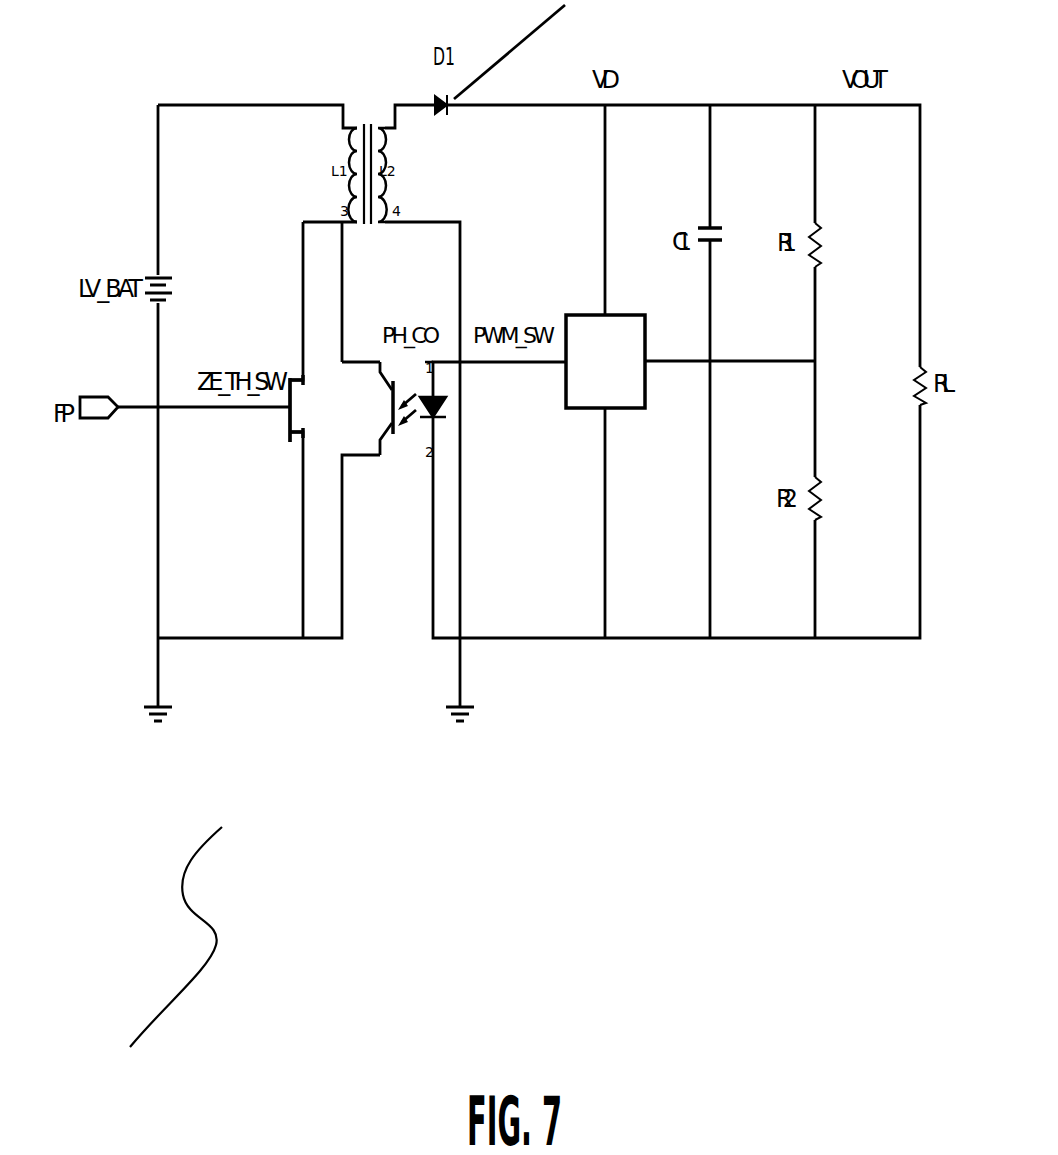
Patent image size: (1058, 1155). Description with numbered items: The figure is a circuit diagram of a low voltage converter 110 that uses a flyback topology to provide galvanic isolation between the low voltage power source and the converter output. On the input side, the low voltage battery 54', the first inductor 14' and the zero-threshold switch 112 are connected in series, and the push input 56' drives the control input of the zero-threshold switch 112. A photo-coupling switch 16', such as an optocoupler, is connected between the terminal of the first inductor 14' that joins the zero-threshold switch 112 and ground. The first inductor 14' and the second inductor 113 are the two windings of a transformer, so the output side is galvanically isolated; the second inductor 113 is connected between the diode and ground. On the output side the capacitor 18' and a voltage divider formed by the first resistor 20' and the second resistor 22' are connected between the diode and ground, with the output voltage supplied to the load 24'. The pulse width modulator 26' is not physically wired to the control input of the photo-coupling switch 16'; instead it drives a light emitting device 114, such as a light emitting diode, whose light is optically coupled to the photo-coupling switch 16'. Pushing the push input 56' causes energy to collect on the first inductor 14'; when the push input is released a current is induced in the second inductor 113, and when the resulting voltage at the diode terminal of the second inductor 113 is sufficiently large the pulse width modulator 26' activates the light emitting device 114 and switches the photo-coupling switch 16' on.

The low voltage power source (LV_BAT) 54' is at (126, 164).
The firing pulse input FP 56' is at (175, 507).
The zero-threshold switch (ZE_TH_SW) 112 is at (282, 353).
The inductor (L1) 14' is at (297, 175).
The second inductor (L2) 113 is at (398, 170).
The photo-coupling switch (SW_1) 16' is at (400, 473).
The light emitting device 114 is at (448, 413).
The Pulse Width Modulator (PWM) 26' is at (622, 412).
The capacitor (C1) 18' is at (685, 191).
The first resistor (R1) 20' is at (841, 216).
The second resistor (R2) 22' is at (851, 529).
The load (RL) 24' is at (898, 359).
The low voltage converter 110 is at (160, 956).